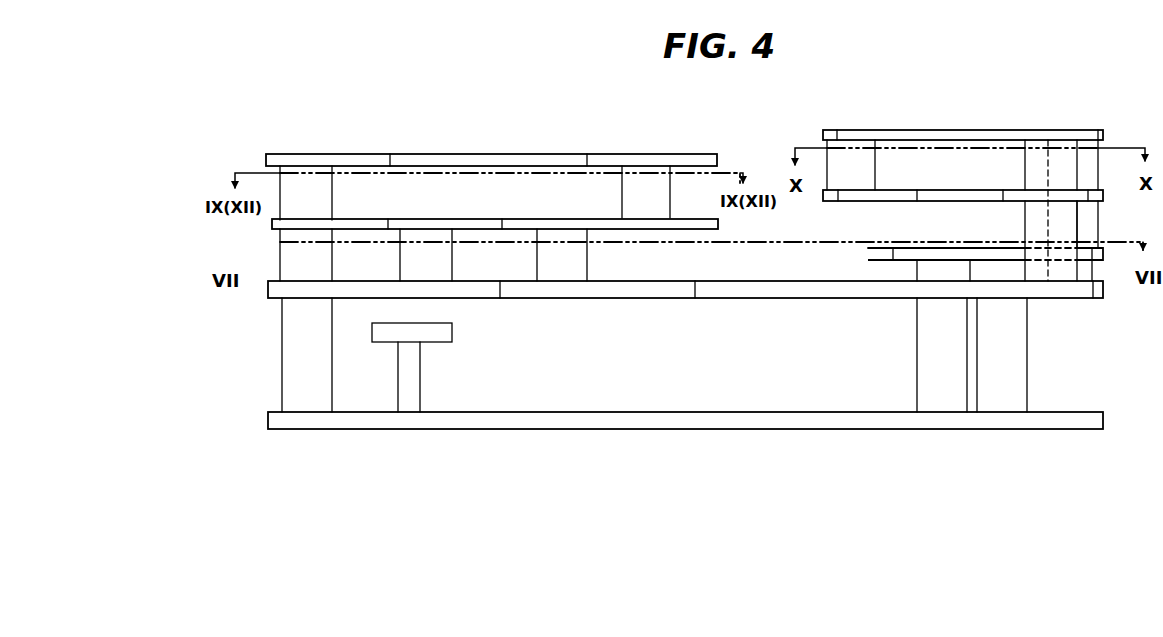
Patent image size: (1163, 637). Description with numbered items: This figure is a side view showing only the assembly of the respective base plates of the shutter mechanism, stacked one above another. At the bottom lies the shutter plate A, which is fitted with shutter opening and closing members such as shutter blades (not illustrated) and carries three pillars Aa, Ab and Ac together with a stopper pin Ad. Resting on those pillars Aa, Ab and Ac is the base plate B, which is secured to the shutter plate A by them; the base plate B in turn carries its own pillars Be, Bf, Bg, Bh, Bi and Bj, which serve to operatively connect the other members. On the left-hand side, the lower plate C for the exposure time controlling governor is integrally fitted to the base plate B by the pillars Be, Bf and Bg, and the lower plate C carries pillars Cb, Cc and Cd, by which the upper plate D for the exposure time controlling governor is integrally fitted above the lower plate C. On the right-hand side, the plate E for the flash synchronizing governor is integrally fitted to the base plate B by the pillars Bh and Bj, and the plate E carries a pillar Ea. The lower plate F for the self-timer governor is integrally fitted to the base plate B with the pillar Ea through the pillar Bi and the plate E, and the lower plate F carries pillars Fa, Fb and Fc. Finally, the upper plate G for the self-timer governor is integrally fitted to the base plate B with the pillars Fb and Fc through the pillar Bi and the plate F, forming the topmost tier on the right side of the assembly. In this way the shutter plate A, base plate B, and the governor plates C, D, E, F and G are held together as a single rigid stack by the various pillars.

The shutter plate A is at (878, 418).
The pillar Aa is at (305, 318).
The pillar Ab is at (940, 375).
The pillar Ac is at (1007, 348).
The stopper pin Ad is at (400, 330).
The base plate B is at (340, 290).
The pillar Be is at (302, 260).
The pillar Bf is at (415, 252).
The pillar Bg is at (547, 252).
The pillar Bh is at (943, 267).
The pillar Bi is at (1060, 213).
The pillar Bj is at (1090, 267).
The lower plate C is at (357, 227).
The pillar Cb is at (655, 253).
The pillar Cc is at (280, 242).
The pillar Cd is at (633, 188).
The upper plate D is at (377, 159).
The plate E is at (883, 255).
The pillar Ea is at (1093, 227).
The lower plate F is at (885, 198).
The pillar Fa is at (867, 173).
The pillar Fb is at (1035, 155).
The pillar Fc is at (1092, 165).
The upper plate G is at (865, 137).